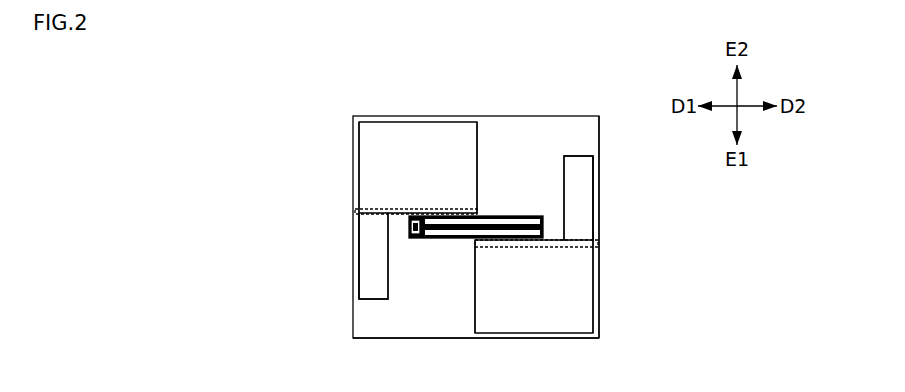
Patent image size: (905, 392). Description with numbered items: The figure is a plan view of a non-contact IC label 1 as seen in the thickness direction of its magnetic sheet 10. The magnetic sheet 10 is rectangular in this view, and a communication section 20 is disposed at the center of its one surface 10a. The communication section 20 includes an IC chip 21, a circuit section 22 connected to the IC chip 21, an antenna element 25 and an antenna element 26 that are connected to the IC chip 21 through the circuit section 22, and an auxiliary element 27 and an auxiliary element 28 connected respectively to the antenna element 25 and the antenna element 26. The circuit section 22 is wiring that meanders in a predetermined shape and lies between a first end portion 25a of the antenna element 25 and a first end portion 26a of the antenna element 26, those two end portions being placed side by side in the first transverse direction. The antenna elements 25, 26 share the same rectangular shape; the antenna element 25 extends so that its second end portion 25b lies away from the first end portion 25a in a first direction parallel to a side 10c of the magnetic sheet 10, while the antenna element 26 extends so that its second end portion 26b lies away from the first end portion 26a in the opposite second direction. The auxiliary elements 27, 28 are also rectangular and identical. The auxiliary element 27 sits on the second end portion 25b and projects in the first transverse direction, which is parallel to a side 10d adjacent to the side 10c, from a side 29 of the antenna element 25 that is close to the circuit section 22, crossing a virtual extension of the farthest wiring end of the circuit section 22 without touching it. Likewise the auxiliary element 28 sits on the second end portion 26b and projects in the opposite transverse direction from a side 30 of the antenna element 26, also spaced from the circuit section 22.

The non-contact IC label 1 is at (481, 214).
The magnetic sheet 10 is at (368, 340).
The one surface 10a is at (427, 328).
The side 10c is at (542, 339).
The side 10d is at (600, 319).
The communication section 20 is at (474, 214).
The IC chip 21 is at (412, 234).
The circuit section 22 is at (513, 217).
The antenna element 25 is at (400, 182).
The first end portion 25a is at (468, 180).
The second end portion 25b is at (362, 188).
The antenna element 26 is at (561, 267).
The first end portion 26a is at (477, 283).
The second end portion 26b is at (584, 263).
The auxiliary element 27 is at (373, 266).
The auxiliary element 28 is at (578, 188).
The side 29 is at (372, 214).
The side 30 is at (577, 239).